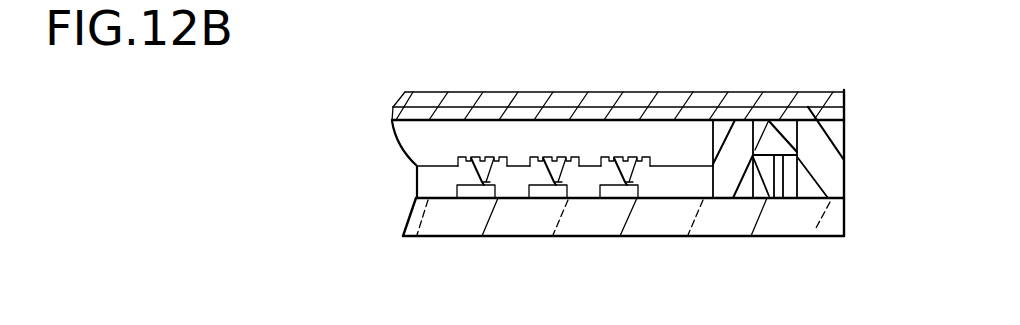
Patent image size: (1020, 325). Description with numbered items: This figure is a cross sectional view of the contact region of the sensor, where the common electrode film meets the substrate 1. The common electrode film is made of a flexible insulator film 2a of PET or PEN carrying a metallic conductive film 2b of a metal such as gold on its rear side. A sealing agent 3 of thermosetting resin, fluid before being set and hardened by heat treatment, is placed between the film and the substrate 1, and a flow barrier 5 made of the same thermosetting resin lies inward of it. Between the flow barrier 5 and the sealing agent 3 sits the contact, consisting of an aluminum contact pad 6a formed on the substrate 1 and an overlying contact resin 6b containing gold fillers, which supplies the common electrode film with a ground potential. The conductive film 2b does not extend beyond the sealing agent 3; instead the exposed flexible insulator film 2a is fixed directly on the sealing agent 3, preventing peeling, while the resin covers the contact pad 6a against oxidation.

The substrate 1 is at (823, 220).
The flexible insulator film 2a is at (590, 92).
The metallic conductive film 2b is at (524, 92).
The sealing agent 3 is at (822, 173).
The flow barrier 5 is at (733, 121).
The contact pad 6a is at (785, 166).
The contact resin 6b is at (770, 121).